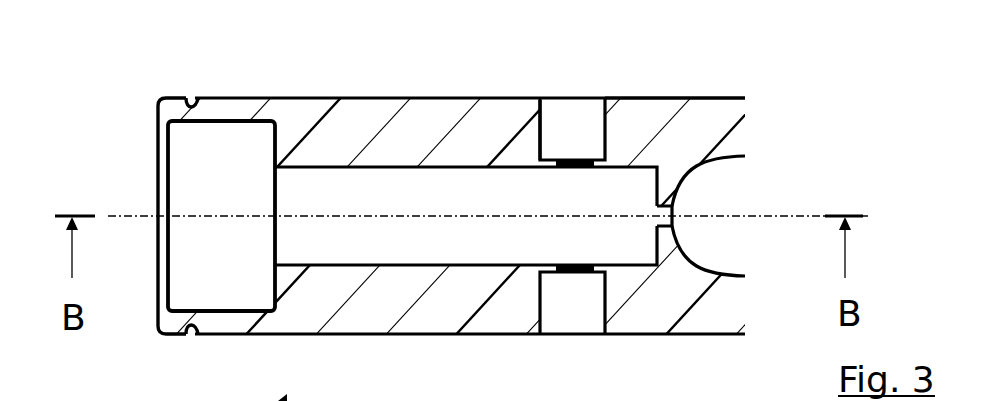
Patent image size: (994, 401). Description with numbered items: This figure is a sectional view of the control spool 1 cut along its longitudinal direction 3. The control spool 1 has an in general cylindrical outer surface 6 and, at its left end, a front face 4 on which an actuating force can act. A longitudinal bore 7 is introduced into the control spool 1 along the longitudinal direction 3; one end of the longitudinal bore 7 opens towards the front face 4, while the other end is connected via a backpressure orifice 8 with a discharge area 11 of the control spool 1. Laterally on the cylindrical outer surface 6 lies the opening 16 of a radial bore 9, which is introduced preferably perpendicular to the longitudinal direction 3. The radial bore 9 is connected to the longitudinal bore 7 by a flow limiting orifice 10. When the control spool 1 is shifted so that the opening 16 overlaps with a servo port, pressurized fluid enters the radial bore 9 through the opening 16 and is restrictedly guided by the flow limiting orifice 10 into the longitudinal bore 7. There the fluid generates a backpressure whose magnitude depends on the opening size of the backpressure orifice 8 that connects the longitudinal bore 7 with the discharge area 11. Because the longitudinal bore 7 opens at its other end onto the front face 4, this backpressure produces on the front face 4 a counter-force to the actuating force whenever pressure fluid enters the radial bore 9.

The control spool 1 is at (347, 120).
The longitudinal direction 3 is at (140, 217).
The front face 4 is at (158, 155).
The cylindrical outer surface 6 is at (648, 96).
The longitudinal bore 7 is at (318, 197).
The backpressure orifice 8 is at (675, 223).
The radial bore 9 is at (578, 122).
The flow limiting orifice 10 is at (570, 160).
The discharge area 11 is at (713, 205).
The opening 16 is at (550, 103).